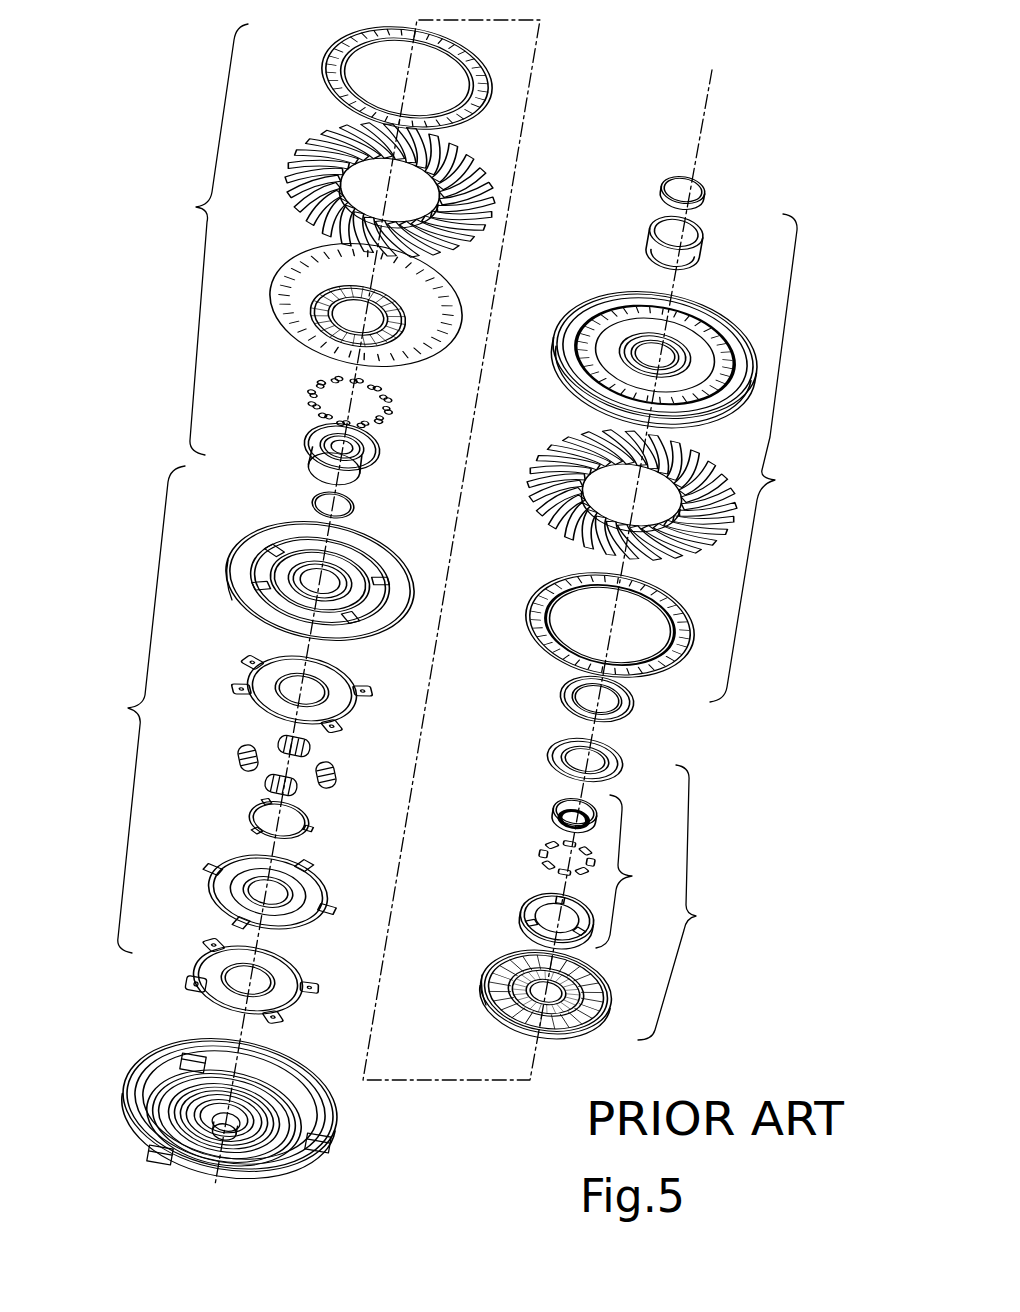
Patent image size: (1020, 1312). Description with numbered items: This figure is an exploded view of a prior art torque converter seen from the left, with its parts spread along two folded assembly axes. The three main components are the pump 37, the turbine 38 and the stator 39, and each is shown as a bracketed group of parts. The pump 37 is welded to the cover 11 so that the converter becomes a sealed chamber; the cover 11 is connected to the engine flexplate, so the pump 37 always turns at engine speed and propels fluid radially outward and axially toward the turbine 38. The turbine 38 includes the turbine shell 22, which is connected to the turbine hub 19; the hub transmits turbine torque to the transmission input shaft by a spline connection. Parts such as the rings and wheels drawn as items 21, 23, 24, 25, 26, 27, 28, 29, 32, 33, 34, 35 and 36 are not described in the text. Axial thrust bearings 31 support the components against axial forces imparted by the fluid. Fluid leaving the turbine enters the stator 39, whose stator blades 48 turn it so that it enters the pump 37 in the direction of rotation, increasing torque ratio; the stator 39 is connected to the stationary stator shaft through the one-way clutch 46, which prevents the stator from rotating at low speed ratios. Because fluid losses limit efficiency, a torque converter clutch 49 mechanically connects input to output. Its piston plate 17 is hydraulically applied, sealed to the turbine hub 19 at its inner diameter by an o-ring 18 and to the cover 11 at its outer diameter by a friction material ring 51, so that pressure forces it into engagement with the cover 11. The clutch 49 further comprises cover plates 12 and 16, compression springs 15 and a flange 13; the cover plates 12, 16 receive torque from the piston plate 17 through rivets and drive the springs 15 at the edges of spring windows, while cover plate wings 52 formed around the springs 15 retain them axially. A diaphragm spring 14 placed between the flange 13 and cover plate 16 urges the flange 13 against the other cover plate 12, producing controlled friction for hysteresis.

The cover 11 is at (152, 1032).
The cover plate 12 is at (188, 948).
The flange 13 is at (202, 858).
The diaphragm spring 14 is at (237, 807).
The springs 15 is at (232, 732).
The cover plate 16 is at (230, 655).
The piston plate 17 is at (222, 527).
The o-ring 18 is at (297, 482).
The turbine hub 19 is at (288, 430).
The rivets 21 is at (307, 383).
The turbine shell 22 is at (277, 273).
The turbine blades 23 is at (293, 155).
The turbine core ring 24 is at (310, 65).
The impeller hub 25 is at (472, 957).
The one-way clutch outer race 26 is at (510, 897).
The rollers 27 is at (527, 848).
The one-way clutch inner race 28 is at (540, 793).
The thrust washer 29 is at (538, 737).
The axial thrust bearings 31 is at (548, 677).
The stator core ring 32 is at (532, 568).
The stator blades 33 is at (547, 430).
The impeller shell 34 is at (577, 288).
The hub 35 is at (637, 232).
The seal ring 36 is at (653, 172).
The pump 37 is at (768, 458).
The turbine 38 is at (207, 239).
The stator 39 is at (689, 902).
The one-way clutch 46 is at (638, 871).
The stator blades 48 is at (482, 985).
The torque converter clutch 49 is at (136, 709).
The friction material ring 51 is at (233, 578).
The cover plate wings 52 is at (205, 978).